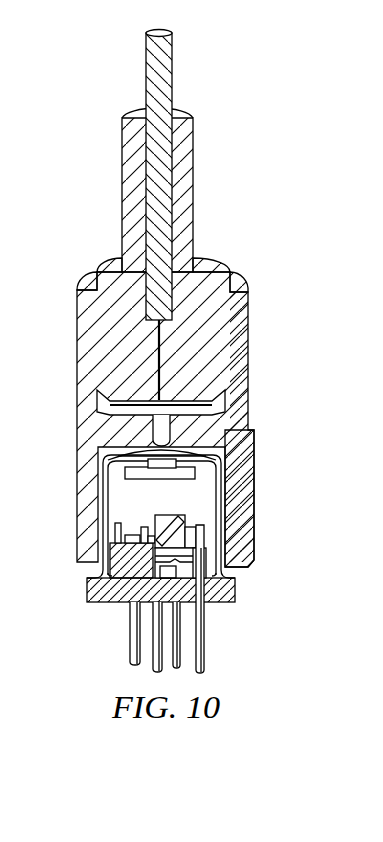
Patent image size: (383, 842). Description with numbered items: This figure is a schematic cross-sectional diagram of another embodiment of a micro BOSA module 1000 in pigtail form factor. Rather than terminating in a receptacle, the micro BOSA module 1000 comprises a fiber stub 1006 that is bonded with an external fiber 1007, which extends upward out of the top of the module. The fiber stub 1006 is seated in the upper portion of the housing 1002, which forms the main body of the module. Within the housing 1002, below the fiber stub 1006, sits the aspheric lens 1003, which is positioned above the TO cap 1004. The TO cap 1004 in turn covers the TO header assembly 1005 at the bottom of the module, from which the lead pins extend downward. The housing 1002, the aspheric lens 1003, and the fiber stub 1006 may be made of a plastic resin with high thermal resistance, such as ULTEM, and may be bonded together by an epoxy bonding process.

The micro BOSA module 1000 is at (253, 197).
The housing 1002 is at (77, 360).
The aspheric lens 1003 is at (145, 453).
The TO cap 1004 is at (203, 458).
The TO header assembly 1005 is at (235, 597).
The fiber stub 1006 is at (122, 222).
The external fiber 1007 is at (172, 70).